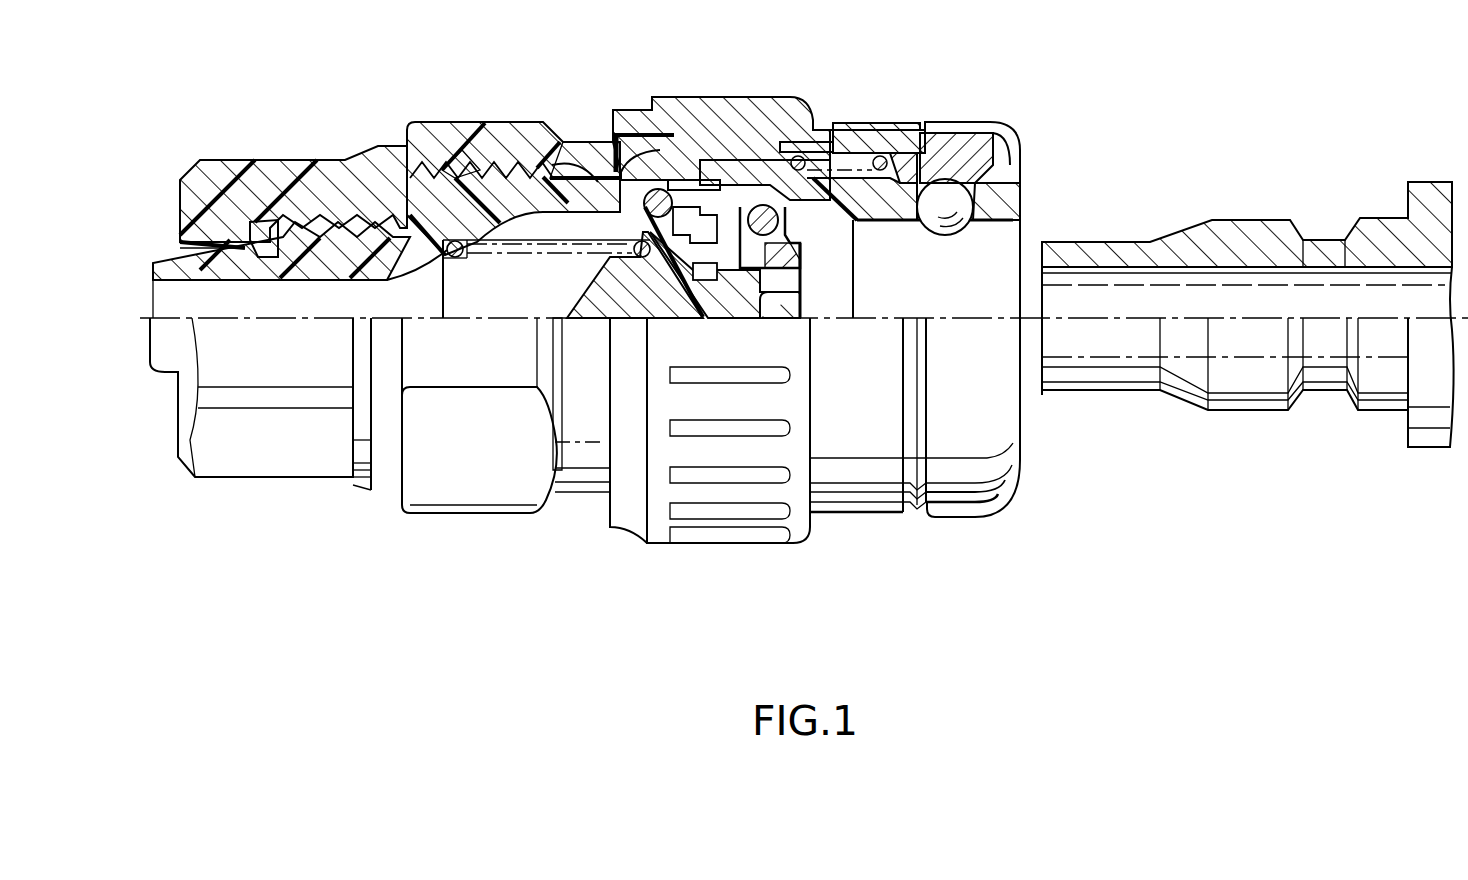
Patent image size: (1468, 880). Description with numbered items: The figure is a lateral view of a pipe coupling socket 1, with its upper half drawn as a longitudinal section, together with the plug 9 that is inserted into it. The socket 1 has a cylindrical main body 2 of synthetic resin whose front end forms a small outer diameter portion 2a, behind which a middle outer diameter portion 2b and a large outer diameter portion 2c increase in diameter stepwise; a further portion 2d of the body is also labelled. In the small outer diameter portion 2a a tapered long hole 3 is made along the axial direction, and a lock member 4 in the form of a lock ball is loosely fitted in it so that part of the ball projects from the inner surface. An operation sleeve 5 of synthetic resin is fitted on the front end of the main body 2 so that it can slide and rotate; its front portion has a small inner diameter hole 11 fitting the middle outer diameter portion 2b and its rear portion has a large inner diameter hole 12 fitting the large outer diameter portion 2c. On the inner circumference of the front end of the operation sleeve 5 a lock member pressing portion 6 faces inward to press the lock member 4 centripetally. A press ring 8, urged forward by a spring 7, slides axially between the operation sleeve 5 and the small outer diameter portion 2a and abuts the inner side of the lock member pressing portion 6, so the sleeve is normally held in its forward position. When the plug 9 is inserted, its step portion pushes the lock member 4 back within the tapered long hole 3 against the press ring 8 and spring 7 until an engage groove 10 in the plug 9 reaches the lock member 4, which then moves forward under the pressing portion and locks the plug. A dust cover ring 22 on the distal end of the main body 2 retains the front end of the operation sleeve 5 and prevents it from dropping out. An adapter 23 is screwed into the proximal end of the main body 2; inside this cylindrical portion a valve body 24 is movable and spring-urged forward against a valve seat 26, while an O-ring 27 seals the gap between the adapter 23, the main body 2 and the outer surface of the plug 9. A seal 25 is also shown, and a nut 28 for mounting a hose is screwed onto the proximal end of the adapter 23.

The socket 1 is at (565, 520).
The main body 2 is at (595, 490).
The small outer diameter portion 2a is at (1010, 197).
The middle outer diameter portion 2b is at (725, 160).
The large outer diameter portion 2c is at (585, 145).
The body portion 2d is at (510, 130).
The tapered long hole 3 is at (903, 222).
The lock member 4 is at (952, 225).
The operation sleeve 5 is at (885, 118).
The lock member pressing portion 6 is at (965, 160).
The spring 7 is at (840, 155).
The press ring 8 is at (905, 170).
The plug 9 is at (1262, 212).
The engage groove 10 is at (1326, 235).
The small inner diameter hole 11 is at (862, 155).
The large inner diameter hole 12 is at (760, 153).
The dust cover ring 22 is at (1005, 145).
The adapter 23 is at (452, 180).
The valve body 24 is at (672, 300).
The O-ring 25 is at (522, 245).
The valve seat 26 is at (658, 190).
The O-ring 27 is at (775, 268).
The nut 28 is at (307, 175).